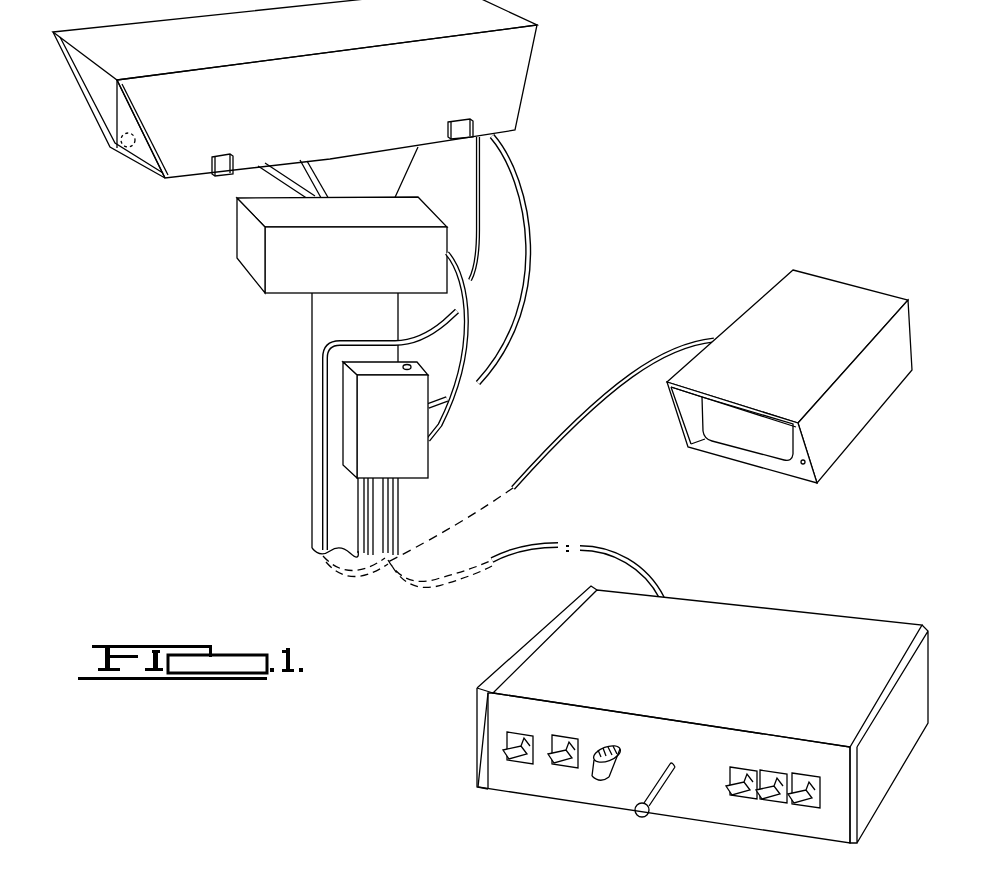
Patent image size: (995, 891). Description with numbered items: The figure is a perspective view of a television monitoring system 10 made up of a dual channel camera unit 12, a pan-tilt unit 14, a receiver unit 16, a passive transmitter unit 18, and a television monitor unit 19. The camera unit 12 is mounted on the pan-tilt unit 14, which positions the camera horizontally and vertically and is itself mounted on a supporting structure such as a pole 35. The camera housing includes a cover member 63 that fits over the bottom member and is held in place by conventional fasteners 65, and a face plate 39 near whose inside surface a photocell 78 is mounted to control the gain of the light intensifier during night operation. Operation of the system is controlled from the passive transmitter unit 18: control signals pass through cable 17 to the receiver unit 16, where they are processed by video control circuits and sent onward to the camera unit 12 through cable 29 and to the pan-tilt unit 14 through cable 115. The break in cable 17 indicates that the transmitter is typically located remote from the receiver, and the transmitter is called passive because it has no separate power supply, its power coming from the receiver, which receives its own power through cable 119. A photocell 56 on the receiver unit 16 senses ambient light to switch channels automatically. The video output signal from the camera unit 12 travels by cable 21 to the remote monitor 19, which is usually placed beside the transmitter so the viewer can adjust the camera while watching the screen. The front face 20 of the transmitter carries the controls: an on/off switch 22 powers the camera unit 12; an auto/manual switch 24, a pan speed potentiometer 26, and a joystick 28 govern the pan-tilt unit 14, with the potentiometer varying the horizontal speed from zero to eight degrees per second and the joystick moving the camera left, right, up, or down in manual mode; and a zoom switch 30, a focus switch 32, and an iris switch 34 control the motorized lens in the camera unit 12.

The television monitoring system 10 is at (204, 481).
The dual channel camera unit 12 is at (329, 109).
The pan-tilt unit 14 is at (247, 250).
The receiver unit 16 is at (403, 425).
The cable 17 is at (383, 508).
The passive transmitter unit 18 is at (667, 715).
The television monitor unit 19 is at (813, 337).
The front face 20 is at (495, 711).
The cable 21 is at (477, 165).
The on/off switch 22 is at (503, 752).
The auto/manual switch 24 is at (548, 765).
The pan speed potentiometer 26 is at (597, 782).
The joystick 28 is at (640, 810).
The cable 29 is at (530, 222).
The zoom switch 30 is at (723, 793).
The focus switch 32 is at (750, 805).
The iris switch 34 is at (792, 808).
The pole 35 is at (323, 315).
The face plate 39 is at (140, 157).
The photocell 56 is at (414, 366).
The cover member 63 is at (507, 111).
The fasteners 65 is at (222, 172).
The photocell 78 is at (118, 156).
The cable 115 is at (473, 313).
The cable 119 is at (365, 510).